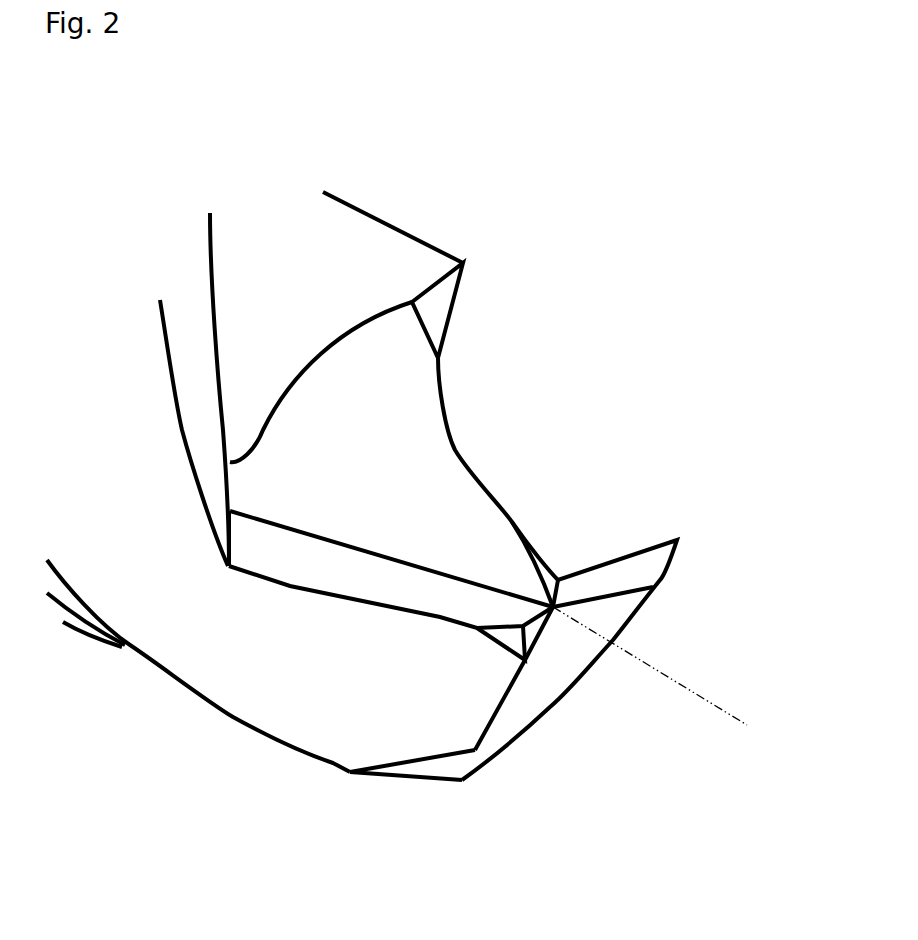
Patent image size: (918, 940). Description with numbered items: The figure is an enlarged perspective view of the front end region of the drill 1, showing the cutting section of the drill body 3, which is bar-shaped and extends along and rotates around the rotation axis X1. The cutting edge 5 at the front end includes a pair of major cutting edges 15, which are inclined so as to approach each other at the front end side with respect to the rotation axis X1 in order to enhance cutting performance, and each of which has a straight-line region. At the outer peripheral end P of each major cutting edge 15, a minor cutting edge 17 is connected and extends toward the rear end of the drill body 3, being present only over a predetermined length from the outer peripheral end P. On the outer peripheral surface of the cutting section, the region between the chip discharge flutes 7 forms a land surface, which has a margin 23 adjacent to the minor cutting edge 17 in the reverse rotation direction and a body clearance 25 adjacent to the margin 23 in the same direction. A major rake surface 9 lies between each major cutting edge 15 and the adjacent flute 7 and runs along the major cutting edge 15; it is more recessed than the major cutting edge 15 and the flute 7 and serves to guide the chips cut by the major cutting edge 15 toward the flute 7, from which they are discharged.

The drill 1 is at (547, 340).
The drill body 3 is at (440, 252).
The cutting edge 5 is at (118, 433).
The chip discharge flute 7 is at (213, 640).
The major rake surface 9 is at (490, 640).
The major cutting edge 15 is at (466, 607).
The minor cutting edge 17 is at (185, 448).
The margin 23 is at (188, 343).
The body clearance 25 is at (337, 235).
The outer peripheral end P is at (225, 567).
The rotation axis X1 is at (674, 680).